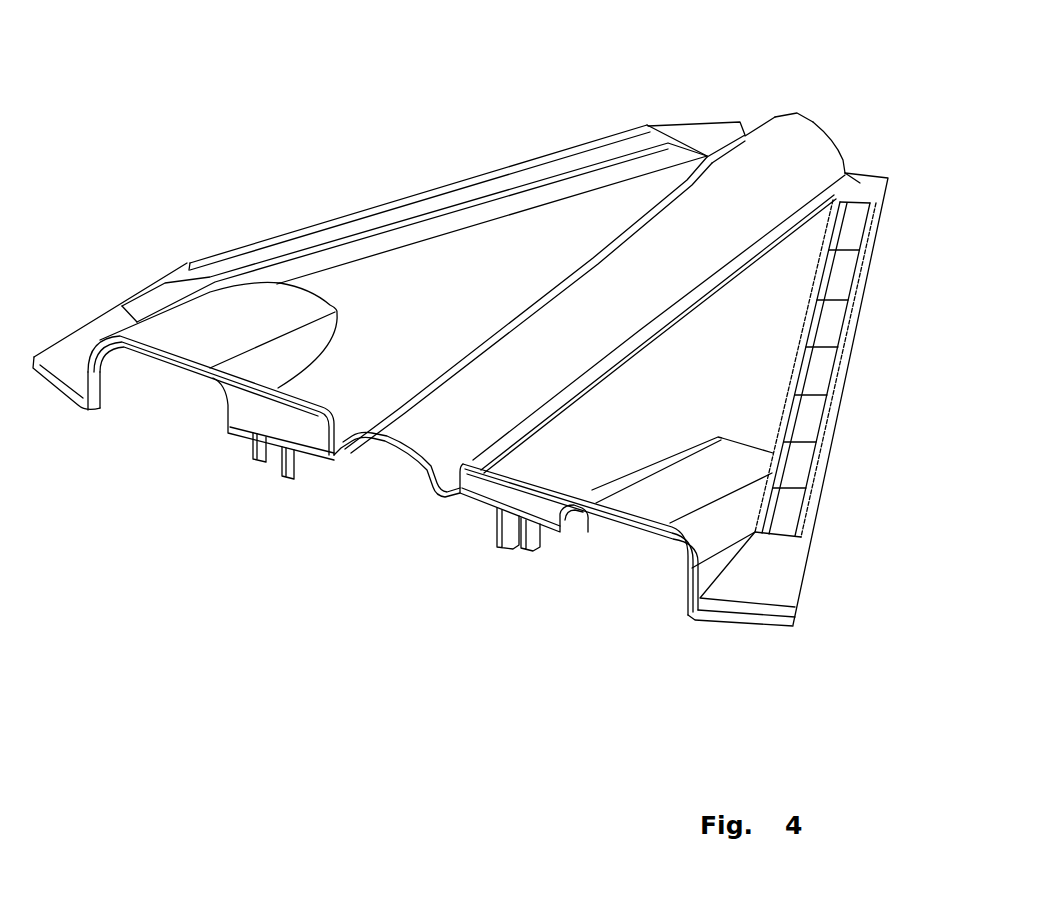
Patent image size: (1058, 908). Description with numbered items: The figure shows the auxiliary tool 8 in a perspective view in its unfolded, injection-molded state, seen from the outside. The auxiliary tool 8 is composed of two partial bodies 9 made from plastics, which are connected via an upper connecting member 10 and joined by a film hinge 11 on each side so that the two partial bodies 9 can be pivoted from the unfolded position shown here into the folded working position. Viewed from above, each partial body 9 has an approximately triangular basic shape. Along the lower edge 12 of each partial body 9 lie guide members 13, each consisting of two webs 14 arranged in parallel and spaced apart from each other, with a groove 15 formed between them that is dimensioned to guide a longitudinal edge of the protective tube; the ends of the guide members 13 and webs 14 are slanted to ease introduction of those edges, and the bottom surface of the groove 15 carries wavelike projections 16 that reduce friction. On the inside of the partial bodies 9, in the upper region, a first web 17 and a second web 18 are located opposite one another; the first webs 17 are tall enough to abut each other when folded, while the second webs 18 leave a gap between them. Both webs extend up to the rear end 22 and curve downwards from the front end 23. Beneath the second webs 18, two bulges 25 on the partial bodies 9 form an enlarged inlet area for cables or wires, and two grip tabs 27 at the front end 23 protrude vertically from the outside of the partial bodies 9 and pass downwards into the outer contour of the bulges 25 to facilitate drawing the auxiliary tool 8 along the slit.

The auxiliary tool 8 is at (668, 80).
The partial body 9 is at (595, 210).
The upper connecting member 10 is at (813, 121).
The film hinge 11 is at (741, 130).
The lower edge 12 is at (103, 316).
The guide member 13 is at (535, 160).
The web 14 is at (443, 190).
The groove 15 is at (315, 240).
The projection 16 is at (820, 370).
The first web 17 is at (285, 478).
The second web 18 is at (255, 461).
The rear end 22 is at (797, 114).
The front end 23 is at (418, 467).
The bulge 25 is at (210, 370).
The grip tab 27 is at (303, 430).